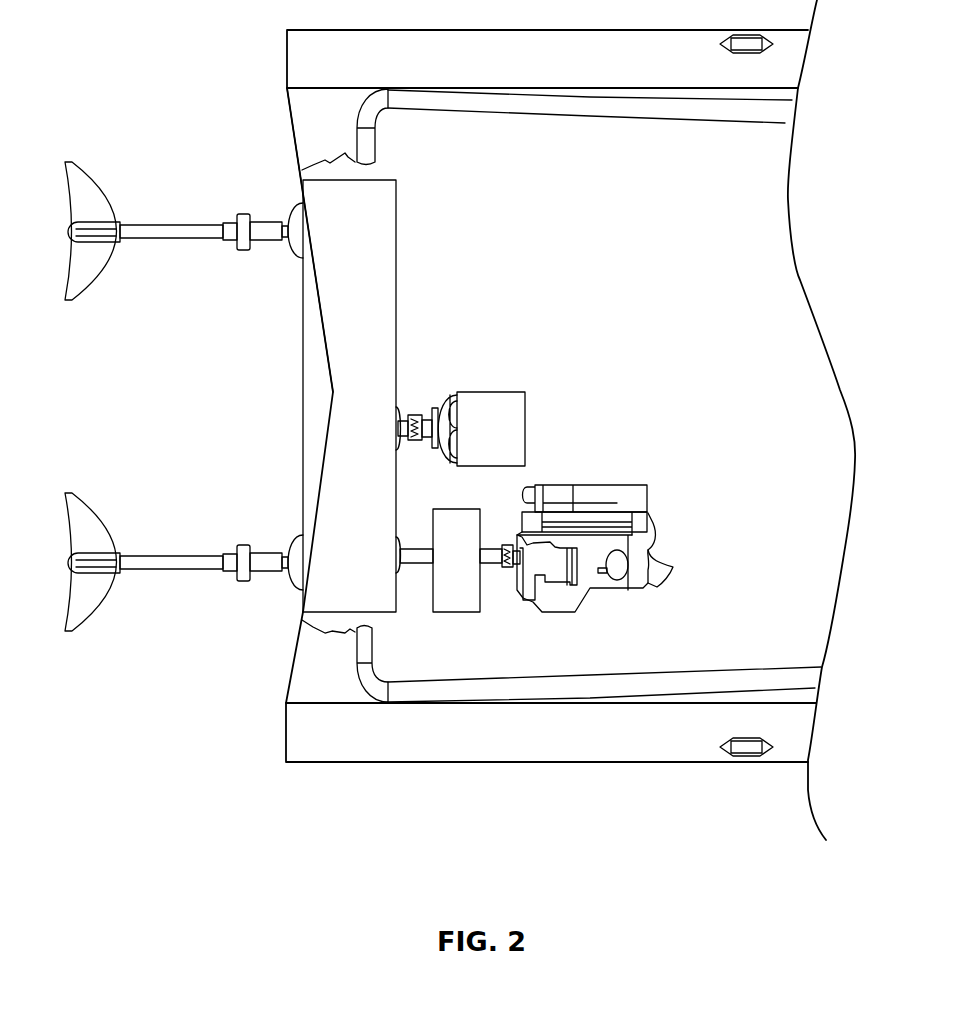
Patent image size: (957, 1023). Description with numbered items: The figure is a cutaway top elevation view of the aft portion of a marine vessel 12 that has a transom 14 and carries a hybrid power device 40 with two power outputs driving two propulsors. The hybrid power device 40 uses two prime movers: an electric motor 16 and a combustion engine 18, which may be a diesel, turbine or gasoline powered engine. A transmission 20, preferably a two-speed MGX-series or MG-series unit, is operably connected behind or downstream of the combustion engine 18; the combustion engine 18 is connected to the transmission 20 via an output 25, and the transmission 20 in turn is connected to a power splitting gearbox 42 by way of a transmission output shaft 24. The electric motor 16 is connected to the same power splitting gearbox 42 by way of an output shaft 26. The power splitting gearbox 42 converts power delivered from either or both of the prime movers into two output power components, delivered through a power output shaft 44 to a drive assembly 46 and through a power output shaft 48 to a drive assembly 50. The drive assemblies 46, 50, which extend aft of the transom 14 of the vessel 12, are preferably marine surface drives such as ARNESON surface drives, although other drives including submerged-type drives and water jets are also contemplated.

The marine vessel 12 is at (450, 30).
The transom 14 is at (290, 128).
The electric motor 16 is at (495, 392).
The combustion engine 18 is at (593, 484).
The transmission 20 is at (471, 576).
The transmission output shaft 24 is at (416, 565).
The output 25 is at (488, 565).
The output shaft 26 is at (406, 412).
The hybrid power device 40 is at (466, 188).
The power splitting gearbox 42 is at (374, 350).
The power output shaft 44 is at (268, 244).
The drive assembly 46 is at (165, 240).
The power output shaft 48 is at (262, 552).
The drive assembly 50 is at (160, 556).